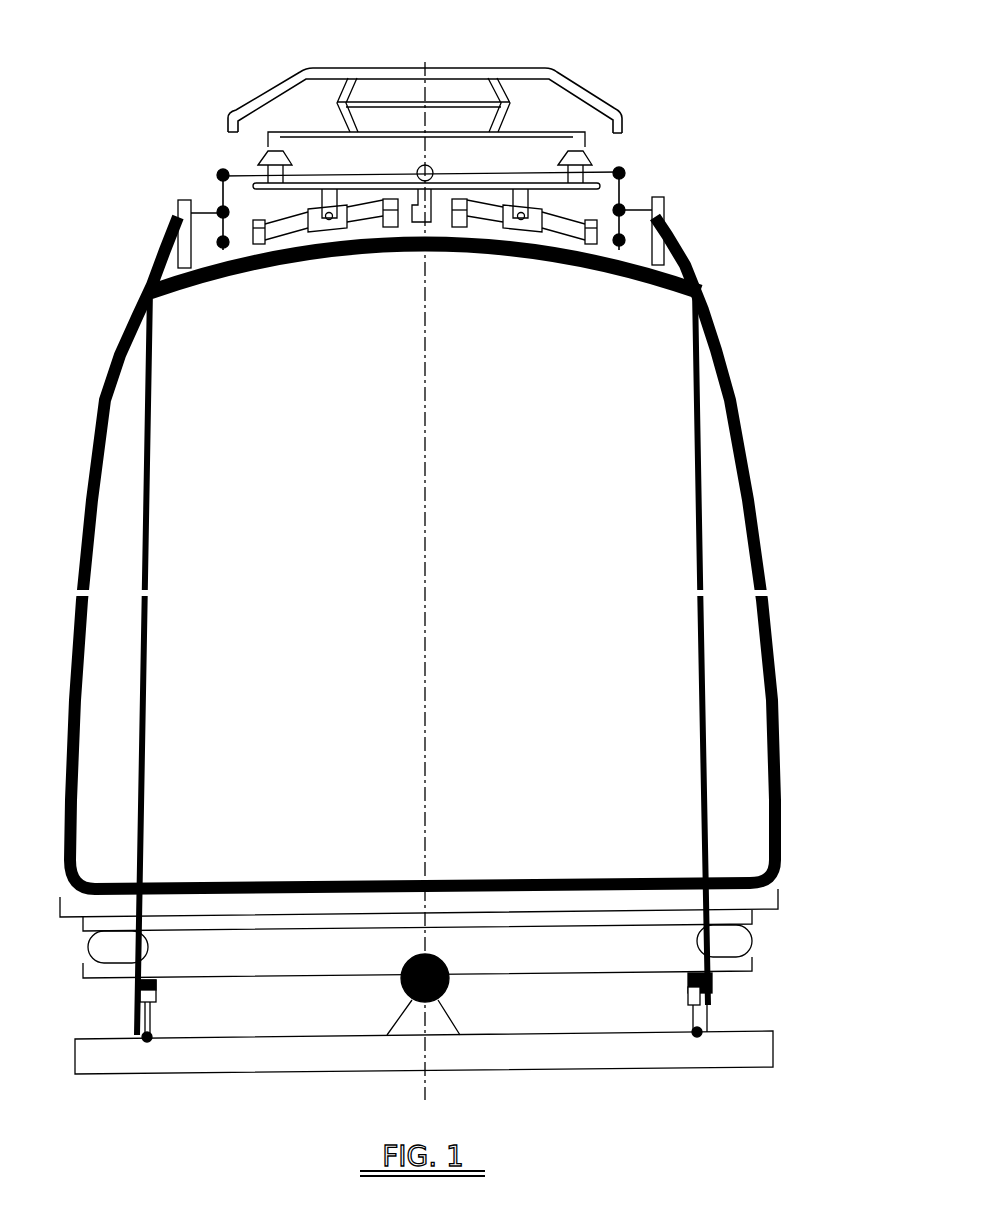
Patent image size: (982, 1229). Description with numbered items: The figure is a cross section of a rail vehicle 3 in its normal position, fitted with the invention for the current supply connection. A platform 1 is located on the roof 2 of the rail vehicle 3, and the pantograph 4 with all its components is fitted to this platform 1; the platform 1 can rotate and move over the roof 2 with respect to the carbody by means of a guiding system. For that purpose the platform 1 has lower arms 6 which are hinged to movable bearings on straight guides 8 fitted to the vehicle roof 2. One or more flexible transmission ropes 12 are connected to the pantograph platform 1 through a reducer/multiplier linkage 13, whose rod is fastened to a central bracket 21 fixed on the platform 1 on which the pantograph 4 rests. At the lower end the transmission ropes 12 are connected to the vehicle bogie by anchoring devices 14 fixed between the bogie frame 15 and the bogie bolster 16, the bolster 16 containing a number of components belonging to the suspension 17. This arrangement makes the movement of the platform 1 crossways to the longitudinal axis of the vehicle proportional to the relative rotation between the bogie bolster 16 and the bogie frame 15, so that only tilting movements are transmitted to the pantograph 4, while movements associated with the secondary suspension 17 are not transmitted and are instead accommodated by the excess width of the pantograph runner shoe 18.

The platform 1 is at (497, 185).
The roof 2 is at (568, 255).
The rail vehicle 3 is at (765, 607).
The pantograph 4 is at (412, 130).
The lower arms 6 is at (527, 200).
The straight guides 8 is at (562, 222).
The flexible transmission ropes 12 is at (142, 435).
The reducer/multiplier linkage 13 is at (220, 192).
The anchoring devices 14 is at (157, 998).
The bogie frame 15 is at (773, 1045).
The bogie bolster 16 is at (588, 960).
The suspension 17 is at (737, 940).
The pantograph runner shoe 18 is at (468, 72).
The central bracket 21 is at (402, 247).